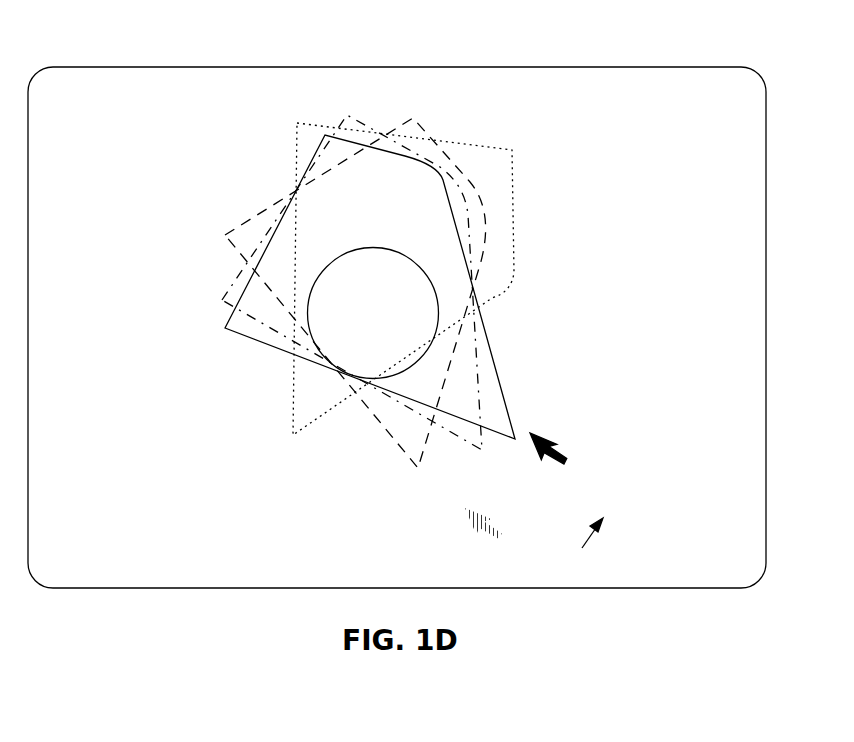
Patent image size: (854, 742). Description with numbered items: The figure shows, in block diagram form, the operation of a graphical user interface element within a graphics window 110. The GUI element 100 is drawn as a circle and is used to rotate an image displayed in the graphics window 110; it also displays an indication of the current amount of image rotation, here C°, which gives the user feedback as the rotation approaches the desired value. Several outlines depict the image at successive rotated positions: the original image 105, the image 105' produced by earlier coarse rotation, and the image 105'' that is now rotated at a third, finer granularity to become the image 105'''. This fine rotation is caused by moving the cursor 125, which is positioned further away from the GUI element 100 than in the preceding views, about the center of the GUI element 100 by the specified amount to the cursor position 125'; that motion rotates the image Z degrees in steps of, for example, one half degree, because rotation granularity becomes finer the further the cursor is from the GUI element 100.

The GUI element 100 is at (372, 255).
The image 105 is at (450, 273).
The image 105' is at (369, 270).
The image 105'' is at (312, 282).
The image 105''' is at (414, 287).
The graphics window 110 is at (257, 579).
The cursor 125 is at (530, 541).
The cursor 125' is at (596, 466).